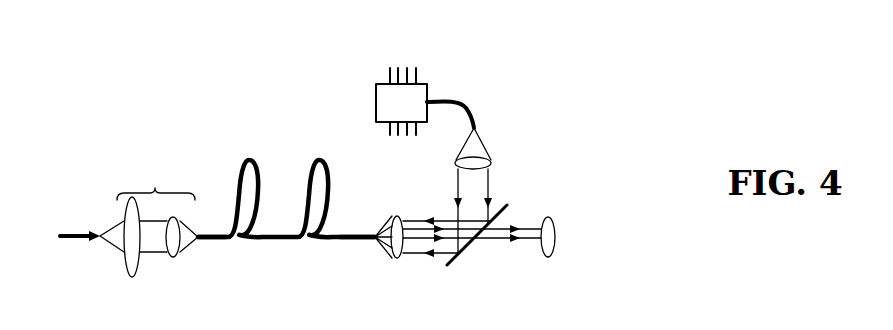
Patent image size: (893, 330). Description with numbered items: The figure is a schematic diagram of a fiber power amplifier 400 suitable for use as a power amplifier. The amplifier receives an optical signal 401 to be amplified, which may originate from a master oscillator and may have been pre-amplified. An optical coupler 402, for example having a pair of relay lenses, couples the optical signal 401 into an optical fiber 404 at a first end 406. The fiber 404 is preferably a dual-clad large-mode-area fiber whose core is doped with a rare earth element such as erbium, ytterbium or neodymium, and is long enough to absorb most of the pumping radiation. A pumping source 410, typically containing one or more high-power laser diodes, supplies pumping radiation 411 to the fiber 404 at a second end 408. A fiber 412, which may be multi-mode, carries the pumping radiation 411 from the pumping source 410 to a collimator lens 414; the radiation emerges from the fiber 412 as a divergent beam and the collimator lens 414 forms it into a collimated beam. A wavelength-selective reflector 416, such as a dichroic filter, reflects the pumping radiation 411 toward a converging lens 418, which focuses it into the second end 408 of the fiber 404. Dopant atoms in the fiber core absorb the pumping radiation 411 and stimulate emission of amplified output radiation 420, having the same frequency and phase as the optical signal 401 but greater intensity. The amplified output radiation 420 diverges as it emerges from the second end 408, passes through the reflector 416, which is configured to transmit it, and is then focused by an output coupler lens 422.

The fiber power amplifier 400 is at (107, 75).
The optical signal 401 is at (80, 247).
The optical coupler 402 is at (155, 192).
The optical fiber 404 is at (241, 167).
The first end 406 is at (212, 243).
The second end 408 is at (370, 242).
The pumping source 410 is at (376, 102).
The pumping radiation 411 is at (457, 194).
The fiber 412 is at (466, 103).
The collimator lens 414 is at (490, 163).
The wavelength-selective reflector 416 is at (472, 243).
The converging lens 418 is at (392, 257).
The amplified output radiation 420 is at (494, 242).
The output coupler lens 422 is at (556, 217).